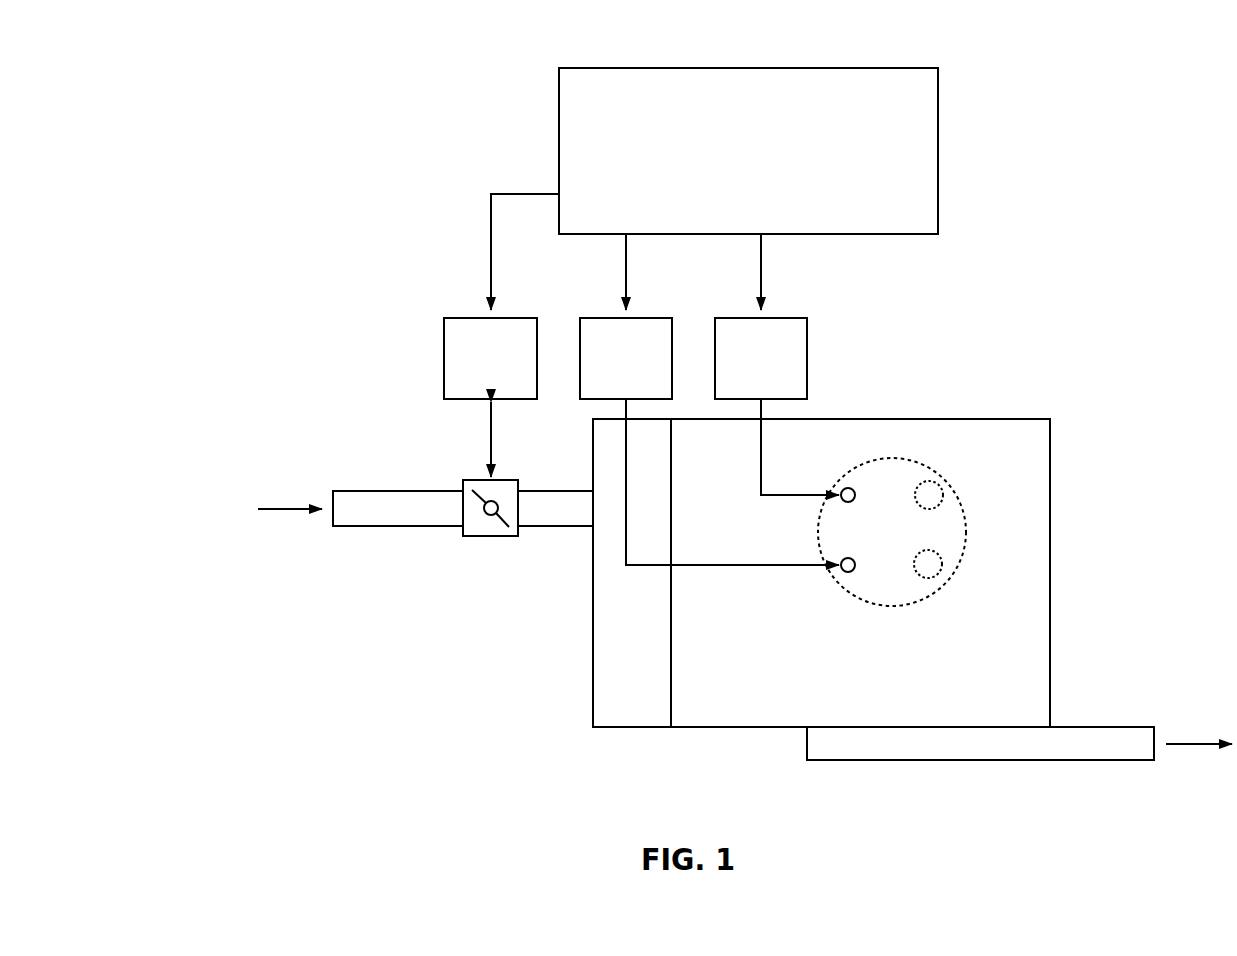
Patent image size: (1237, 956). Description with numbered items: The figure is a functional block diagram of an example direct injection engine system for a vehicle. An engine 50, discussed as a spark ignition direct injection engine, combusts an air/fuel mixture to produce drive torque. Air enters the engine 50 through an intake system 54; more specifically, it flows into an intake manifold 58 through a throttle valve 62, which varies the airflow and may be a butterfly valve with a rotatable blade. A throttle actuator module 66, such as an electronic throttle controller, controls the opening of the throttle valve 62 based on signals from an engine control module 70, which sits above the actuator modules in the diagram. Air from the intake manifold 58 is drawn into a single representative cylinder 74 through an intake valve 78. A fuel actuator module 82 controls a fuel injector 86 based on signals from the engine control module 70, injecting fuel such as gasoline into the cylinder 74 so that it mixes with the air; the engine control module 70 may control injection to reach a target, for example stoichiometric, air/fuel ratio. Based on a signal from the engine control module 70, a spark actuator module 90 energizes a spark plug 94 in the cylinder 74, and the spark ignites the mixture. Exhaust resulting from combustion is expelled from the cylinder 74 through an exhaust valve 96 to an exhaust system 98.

The engine 50 is at (943, 419).
The intake system 54 is at (159, 431).
The intake manifold 58 is at (593, 450).
The throttle valve 62 is at (483, 537).
The throttle actuator module 66 is at (462, 318).
The engine control module 70 is at (748, 68).
The cylinder 74 is at (862, 604).
The intake valve 78 is at (930, 481).
The fuel actuator module 82 is at (652, 318).
The fuel injector 86 is at (843, 572).
The spark actuator module 90 is at (787, 318).
The spark plug 94 is at (844, 488).
The exhaust valve 96 is at (927, 578).
The exhaust system 98 is at (1106, 761).